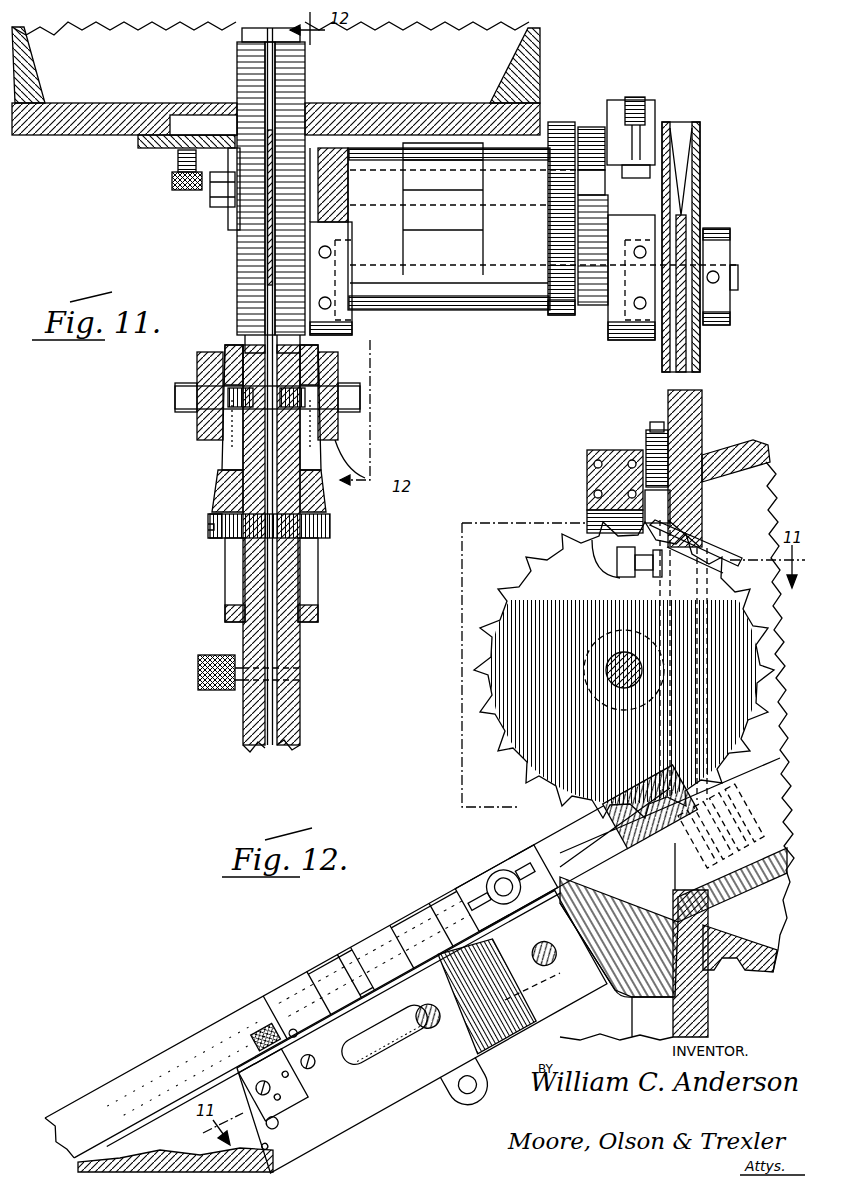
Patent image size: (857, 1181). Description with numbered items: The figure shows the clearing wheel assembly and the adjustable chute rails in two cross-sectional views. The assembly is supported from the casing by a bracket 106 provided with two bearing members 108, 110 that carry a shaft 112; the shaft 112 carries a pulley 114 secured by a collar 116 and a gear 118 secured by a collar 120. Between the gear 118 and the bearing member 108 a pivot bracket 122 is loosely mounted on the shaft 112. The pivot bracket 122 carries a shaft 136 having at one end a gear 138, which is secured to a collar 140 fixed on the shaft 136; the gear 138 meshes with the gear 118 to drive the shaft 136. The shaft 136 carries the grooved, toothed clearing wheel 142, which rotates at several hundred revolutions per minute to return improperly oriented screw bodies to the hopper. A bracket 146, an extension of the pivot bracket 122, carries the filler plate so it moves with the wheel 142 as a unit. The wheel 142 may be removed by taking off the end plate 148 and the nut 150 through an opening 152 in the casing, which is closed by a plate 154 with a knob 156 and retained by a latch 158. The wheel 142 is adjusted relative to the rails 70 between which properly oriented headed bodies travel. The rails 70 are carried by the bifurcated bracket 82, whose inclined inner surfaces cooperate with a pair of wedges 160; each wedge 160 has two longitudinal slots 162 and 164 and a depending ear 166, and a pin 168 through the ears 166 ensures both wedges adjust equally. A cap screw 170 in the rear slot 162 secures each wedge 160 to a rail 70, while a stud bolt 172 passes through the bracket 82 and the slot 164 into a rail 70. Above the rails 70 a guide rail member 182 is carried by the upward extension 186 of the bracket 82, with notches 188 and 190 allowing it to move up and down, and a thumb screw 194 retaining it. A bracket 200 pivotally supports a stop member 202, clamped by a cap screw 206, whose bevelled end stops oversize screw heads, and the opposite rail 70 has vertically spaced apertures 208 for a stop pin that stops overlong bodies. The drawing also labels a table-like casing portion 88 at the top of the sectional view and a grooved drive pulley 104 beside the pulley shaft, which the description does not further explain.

In FIG. 11, the rails 70 is at (300, 650).
In FIG. 12, the rails 70 is at (412, 1080).
In FIG. 11, the bracket 82 is at (350, 461).
In FIG. 12, the bracket 82 is at (585, 1030).
In FIG. 11, the table 88 is at (76, 112).
In FIG. 11, the pulley 104 is at (680, 124).
In FIG. 11, the bracket 106 is at (622, 104).
In FIG. 11, the bearing member 108 is at (352, 322).
In FIG. 11, the bearing member 110 is at (625, 340).
In FIG. 11, the shaft 112 is at (738, 270).
In FIG. 11, the pulley 114 is at (700, 178).
In FIG. 11, the collar 116 is at (716, 230).
In FIG. 11, the gear 118 is at (560, 316).
In FIG. 11, the collar 120 is at (588, 306).
In FIG. 11, the pivot bracket 122 is at (468, 310).
In FIG. 11, the shaft 136 is at (465, 200).
In FIG. 12, the shaft 136 is at (606, 670).
In FIG. 11, the gear 138 is at (560, 124).
In FIG. 11, the collar 140 is at (592, 128).
In FIG. 11, the clearing wheel 142 is at (286, 236).
In FIG. 12, the clearing wheel 142 is at (500, 655).
In FIG. 11, the bracket 146 is at (334, 150).
In FIG. 12, the bracket 146 is at (592, 452).
In FIG. 11, the end plate 148 is at (228, 218).
In FIG. 11, the nut 150 is at (212, 200).
In FIG. 11, the opening 152 is at (178, 115).
In FIG. 12, the opening 152 is at (690, 538).
In FIG. 11, the plate 154 is at (140, 144).
In FIG. 12, the plate 154 is at (670, 505).
In FIG. 11, the knob 156 is at (172, 181).
In FIG. 12, the knob 156 is at (617, 560).
In FIG. 12, the latch 158 is at (646, 438).
In FIG. 11, the wedges 160 is at (325, 497).
In FIG. 12, the wedges 160 is at (400, 922).
In FIG. 11, the slot 162 is at (318, 608).
In FIG. 12, the slot 162 is at (355, 965).
In FIG. 11, the slot 164 is at (230, 467).
In FIG. 12, the slot 164 is at (452, 902).
In FIG. 12, the depending ear 166 is at (470, 1073).
In FIG. 11, the pin 168 is at (212, 520).
In FIG. 12, the pin 168 is at (466, 1095).
In FIG. 11, the cap screw 170 is at (330, 530).
In FIG. 12, the cap screw 170 is at (380, 940).
In FIG. 11, the stud bolt 172 is at (360, 398).
In FIG. 12, the guide rail member 182 is at (600, 815).
In FIG. 12, the upward extension 186 is at (470, 882).
In FIG. 12, the notch 188 is at (168, 1052).
In FIG. 12, the notch 190 is at (495, 862).
In FIG. 12, the thumb screw 194 is at (515, 858).
In FIG. 12, the bracket 200 is at (348, 1102).
In FIG. 12, the stop member 202 is at (296, 1005).
In FIG. 12, the cap screw 206 is at (262, 1032).
In FIG. 12, the apertures 208 is at (278, 1125).